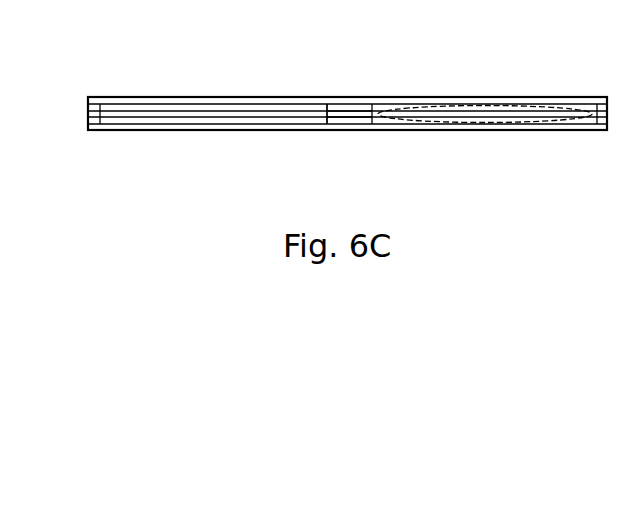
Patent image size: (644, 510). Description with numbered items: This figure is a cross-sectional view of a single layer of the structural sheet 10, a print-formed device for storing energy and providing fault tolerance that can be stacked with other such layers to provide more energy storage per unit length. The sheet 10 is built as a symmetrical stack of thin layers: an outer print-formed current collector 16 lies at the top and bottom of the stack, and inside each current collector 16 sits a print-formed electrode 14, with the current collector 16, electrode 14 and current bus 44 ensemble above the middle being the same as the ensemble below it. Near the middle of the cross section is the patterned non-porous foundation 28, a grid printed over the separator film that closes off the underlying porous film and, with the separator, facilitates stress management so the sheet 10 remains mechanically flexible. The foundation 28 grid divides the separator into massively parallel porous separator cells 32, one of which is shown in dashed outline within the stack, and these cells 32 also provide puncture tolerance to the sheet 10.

The structural sheet 10 is at (79, 130).
The current collector 16 is at (143, 100).
The electrode 14 is at (195, 108).
The patterned non-porous foundation 28 is at (325, 106).
The current bus 44 is at (355, 105).
The porous separator cell 32 is at (488, 103).